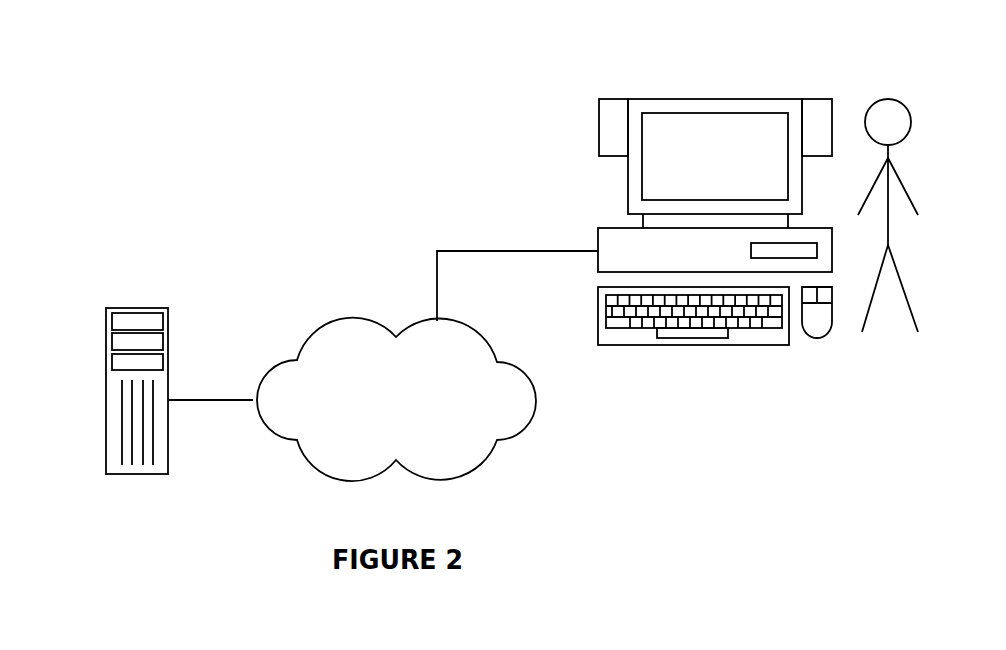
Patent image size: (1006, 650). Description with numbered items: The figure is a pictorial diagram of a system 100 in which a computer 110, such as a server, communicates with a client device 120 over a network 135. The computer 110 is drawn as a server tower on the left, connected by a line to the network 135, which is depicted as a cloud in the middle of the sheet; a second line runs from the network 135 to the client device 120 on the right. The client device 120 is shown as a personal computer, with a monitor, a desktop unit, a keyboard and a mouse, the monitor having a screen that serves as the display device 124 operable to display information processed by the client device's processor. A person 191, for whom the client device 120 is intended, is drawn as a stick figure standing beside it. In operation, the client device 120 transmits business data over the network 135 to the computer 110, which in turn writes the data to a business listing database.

The system 100 is at (195, 83).
The computer 110 is at (105, 322).
The client device 120 is at (598, 187).
The display device 124 is at (728, 112).
The network 135 is at (353, 320).
The person 191 is at (908, 170).